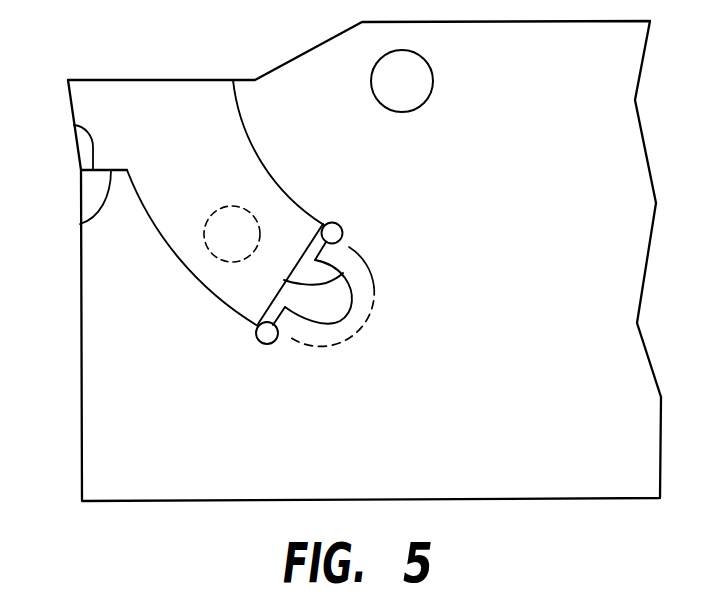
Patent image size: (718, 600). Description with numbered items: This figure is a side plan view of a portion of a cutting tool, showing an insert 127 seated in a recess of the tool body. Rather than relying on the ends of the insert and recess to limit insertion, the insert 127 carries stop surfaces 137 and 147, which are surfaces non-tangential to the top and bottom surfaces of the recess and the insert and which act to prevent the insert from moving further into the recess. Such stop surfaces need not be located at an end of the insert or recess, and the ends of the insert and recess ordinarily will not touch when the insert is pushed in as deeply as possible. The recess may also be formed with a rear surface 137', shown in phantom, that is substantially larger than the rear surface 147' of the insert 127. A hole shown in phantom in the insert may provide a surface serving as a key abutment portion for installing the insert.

The insert 127 is at (211, 185).
The stop surface 137 is at (54, 141).
The rear surface of the recess 137' is at (388, 296).
The stop surface 147 is at (65, 205).
The rear surface of the insert 147' is at (342, 284).